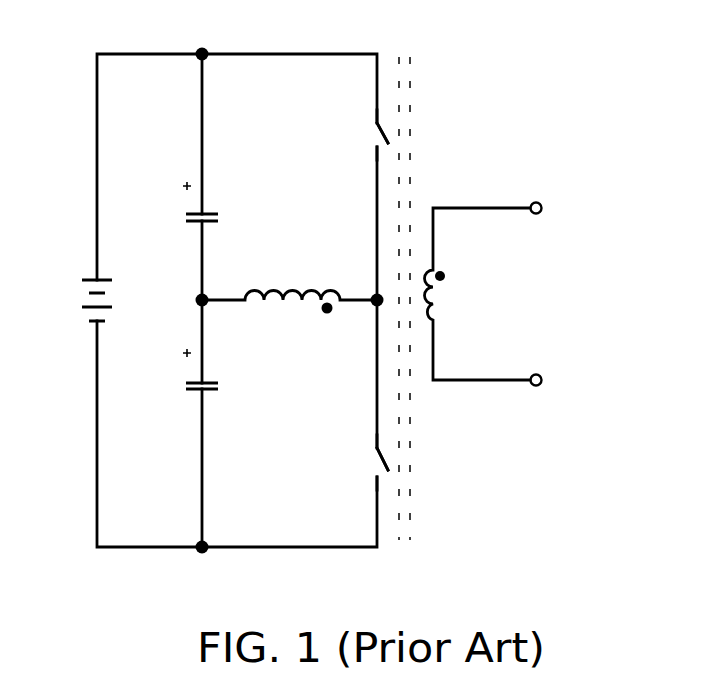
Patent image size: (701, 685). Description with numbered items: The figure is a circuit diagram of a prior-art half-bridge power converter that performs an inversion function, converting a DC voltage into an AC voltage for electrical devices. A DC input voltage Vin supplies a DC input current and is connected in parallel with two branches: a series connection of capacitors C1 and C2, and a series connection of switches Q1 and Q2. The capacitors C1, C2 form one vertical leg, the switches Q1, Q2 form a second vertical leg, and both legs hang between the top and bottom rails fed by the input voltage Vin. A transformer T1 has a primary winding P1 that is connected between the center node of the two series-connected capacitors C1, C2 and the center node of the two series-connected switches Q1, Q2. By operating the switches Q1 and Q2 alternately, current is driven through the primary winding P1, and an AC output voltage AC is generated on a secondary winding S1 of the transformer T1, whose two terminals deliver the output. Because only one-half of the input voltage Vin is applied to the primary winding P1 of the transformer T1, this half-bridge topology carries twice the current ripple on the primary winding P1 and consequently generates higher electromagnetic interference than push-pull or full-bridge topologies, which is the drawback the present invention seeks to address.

The DC input voltage Vin is at (77, 279).
The capacitor C1 is at (177, 206).
The capacitor C2 is at (177, 376).
The switch Q1 is at (360, 135).
The switch Q2 is at (360, 462).
The primary winding P1 is at (289, 278).
The transformer T1 is at (404, 278).
The secondary winding S1 is at (478, 294).
The AC output voltage AC is at (537, 294).